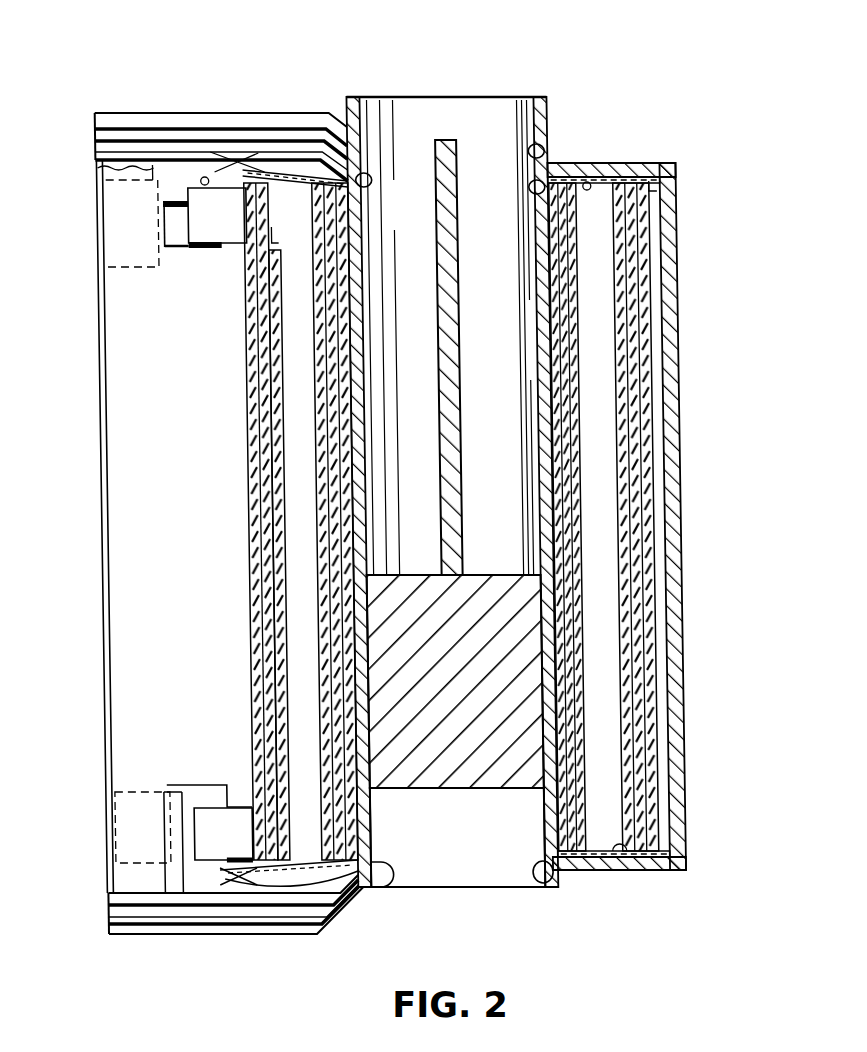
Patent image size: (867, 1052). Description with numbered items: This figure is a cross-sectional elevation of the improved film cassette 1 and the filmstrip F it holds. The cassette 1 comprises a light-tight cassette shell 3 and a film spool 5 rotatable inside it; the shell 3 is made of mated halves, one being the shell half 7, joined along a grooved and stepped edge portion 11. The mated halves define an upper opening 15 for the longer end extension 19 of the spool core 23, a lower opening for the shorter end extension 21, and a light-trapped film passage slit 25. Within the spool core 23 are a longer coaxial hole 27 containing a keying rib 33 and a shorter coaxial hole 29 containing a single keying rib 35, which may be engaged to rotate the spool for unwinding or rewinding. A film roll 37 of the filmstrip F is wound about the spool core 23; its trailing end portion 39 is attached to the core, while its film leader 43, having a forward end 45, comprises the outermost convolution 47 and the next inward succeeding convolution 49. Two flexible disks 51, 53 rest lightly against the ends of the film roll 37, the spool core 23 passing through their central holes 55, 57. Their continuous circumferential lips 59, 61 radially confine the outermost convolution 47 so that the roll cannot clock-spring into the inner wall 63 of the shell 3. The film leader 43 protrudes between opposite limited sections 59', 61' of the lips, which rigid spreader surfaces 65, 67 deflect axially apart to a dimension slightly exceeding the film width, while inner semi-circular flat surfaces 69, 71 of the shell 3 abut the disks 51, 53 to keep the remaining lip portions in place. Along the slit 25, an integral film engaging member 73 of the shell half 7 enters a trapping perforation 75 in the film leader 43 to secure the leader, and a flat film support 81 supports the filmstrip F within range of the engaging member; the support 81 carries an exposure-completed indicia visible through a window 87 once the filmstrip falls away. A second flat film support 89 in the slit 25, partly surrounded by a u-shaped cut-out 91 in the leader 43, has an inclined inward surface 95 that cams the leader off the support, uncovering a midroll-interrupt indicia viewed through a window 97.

The film cassette 1 is at (172, 93).
The cassette shell 3 is at (676, 806).
The film spool 5 is at (643, 617).
The shell half 7 is at (221, 112).
The grooved and stepped edge portion 11 is at (100, 141).
The upper opening 15 is at (542, 151).
The longer end extension 19 is at (547, 97).
The shorter end extension 21 is at (544, 888).
The spool core 23 is at (488, 564).
The film passage slit 25 is at (123, 308).
The longer coaxial hole 27 is at (418, 94).
The shorter coaxial hole 29 is at (419, 866).
The keying rib 33 is at (455, 168).
The keying rib 35 is at (483, 790).
The film roll 37 is at (232, 347).
The trailing end portion 39 is at (522, 393).
The film leader 43 is at (135, 680).
The forward end 45 is at (94, 572).
The outermost convolution 47 is at (252, 389).
The next inward succeeding convolution 49 is at (250, 436).
The flexible disk 51 is at (241, 170).
The flexible disk 53 is at (219, 892).
The central hole 55 is at (368, 182).
The central hole 57 is at (367, 890).
The circumferential lip 59 is at (690, 186).
The limited lip section 59' is at (251, 169).
The circumferential lip 61 is at (654, 842).
The limited lip section 61' is at (217, 881).
The inner wall 63 is at (660, 499).
The spreader surface 65 is at (204, 185).
The spreader surface 67 is at (226, 858).
The inner semi-circular flat surface 69 is at (601, 178).
The inner semi-circular flat surface 71 is at (600, 860).
The film engaging member 73 is at (194, 250).
The trapping perforation 75 is at (172, 238).
The film support 81 is at (138, 244).
The window 87 is at (118, 197).
The film support 89 is at (95, 860).
The u-shaped cut-out 91 is at (206, 785).
The inward surface 95 is at (158, 792).
The window 97 is at (131, 790).
The filmstrip F is at (233, 510).